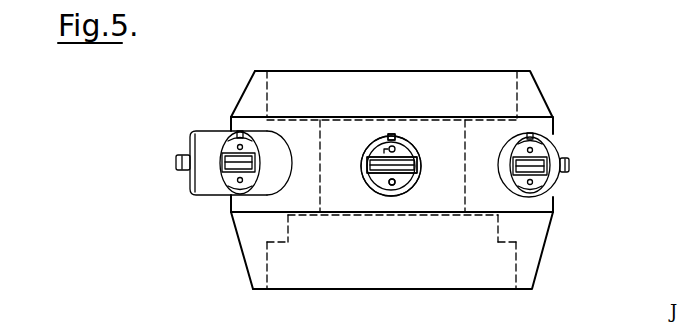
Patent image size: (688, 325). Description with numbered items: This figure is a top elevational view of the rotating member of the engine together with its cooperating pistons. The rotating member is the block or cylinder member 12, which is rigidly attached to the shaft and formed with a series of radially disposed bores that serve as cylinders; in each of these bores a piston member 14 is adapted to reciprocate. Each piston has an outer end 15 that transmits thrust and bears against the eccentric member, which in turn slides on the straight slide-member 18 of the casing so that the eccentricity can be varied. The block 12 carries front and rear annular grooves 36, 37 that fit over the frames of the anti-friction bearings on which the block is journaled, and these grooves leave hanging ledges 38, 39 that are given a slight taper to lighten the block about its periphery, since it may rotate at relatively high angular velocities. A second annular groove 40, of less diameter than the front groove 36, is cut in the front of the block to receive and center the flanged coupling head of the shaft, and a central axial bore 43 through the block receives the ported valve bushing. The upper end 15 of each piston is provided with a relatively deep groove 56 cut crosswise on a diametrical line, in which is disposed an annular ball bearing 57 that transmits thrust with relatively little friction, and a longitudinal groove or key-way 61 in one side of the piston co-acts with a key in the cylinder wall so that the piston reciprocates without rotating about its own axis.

The block or cylinder member 12 is at (549, 100).
The piston member 14 is at (278, 173).
The outer end of piston 15 is at (398, 140).
The slide-member 18 is at (540, 7).
The front annular groove 36 is at (268, 260).
The rear annular groove 37 is at (270, 87).
The hanging ledge 38 is at (263, 290).
The hanging ledge 39 is at (256, 70).
The second annular groove 40 is at (288, 222).
The central axial bore 43 is at (322, 137).
The groove 56 is at (404, 185).
The annular ball bearing 57 is at (570, 168).
The longitudinal groove or key-way 61 is at (390, 135).